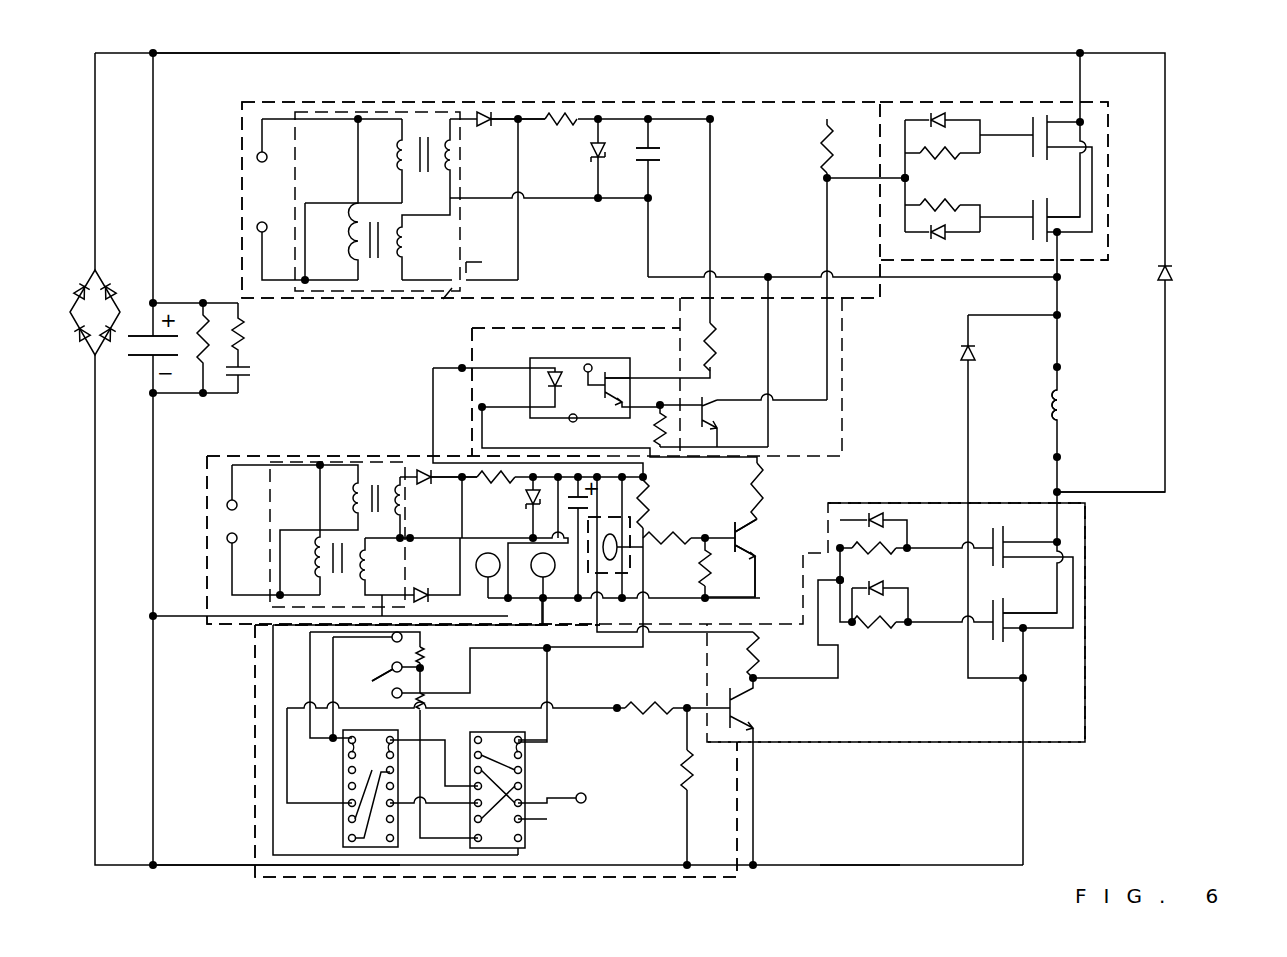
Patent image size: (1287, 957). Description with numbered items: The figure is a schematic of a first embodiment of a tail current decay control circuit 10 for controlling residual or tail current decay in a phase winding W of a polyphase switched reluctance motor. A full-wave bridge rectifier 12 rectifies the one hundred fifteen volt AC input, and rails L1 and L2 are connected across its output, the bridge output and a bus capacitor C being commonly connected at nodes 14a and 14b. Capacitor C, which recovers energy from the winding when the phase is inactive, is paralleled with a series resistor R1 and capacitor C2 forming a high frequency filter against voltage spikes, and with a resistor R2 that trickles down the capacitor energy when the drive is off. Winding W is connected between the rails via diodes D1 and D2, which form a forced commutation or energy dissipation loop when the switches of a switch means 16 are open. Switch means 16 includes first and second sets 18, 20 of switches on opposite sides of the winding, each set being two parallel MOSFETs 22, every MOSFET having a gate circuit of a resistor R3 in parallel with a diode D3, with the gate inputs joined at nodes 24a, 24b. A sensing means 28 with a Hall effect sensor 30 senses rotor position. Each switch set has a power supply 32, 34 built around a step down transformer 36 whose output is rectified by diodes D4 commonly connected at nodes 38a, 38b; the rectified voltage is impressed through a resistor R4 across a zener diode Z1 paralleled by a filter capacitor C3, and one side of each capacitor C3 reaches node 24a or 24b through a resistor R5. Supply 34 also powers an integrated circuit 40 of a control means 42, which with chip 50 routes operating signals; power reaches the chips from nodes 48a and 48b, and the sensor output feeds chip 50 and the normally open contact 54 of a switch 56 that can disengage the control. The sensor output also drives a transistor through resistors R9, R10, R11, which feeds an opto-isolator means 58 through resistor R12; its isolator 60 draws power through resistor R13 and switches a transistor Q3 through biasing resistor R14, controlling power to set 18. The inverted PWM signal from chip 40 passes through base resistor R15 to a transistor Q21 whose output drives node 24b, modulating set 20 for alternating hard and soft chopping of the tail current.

The tail current decay control circuit 10 is at (1165, 492).
The full-wave bridge rectifier 12 is at (84, 367).
The node 14a is at (276, 75).
The node 14b is at (153, 862).
The switch means 16 is at (1152, 217).
The first set of switches 18 is at (1097, 275).
The second set of switches 20 is at (1097, 663).
The MOSFET 22 is at (1030, 136).
The node 24a is at (905, 181).
The node 24b is at (838, 578).
The sensing means 28 is at (645, 585).
The Hall effect sensor 30 is at (616, 552).
The power supply 32 is at (350, 93).
The power supply 34 is at (410, 449).
The step down transformer 36 is at (293, 182).
The node 38a is at (518, 117).
The node 38b is at (458, 470).
The integrated circuit 40 is at (343, 778).
The control means 42 is at (250, 651).
The node 48a is at (505, 600).
The node 48b is at (560, 590).
The chip 50 is at (526, 765).
The normally open contact 54 is at (378, 693).
The switch 56 is at (348, 652).
The opto-isolator means 58 is at (470, 345).
The isolator 60 is at (591, 358).
The bus capacitor C is at (138, 333).
The capacitor C2 is at (253, 369).
The filter capacitor C3 is at (652, 163).
The resistor R1 is at (243, 327).
The resistor R2 is at (203, 318).
The resistor R3 is at (945, 160).
The resistor R4 is at (575, 128).
The resistor R5 is at (823, 150).
The resistor R9 is at (650, 520).
The resistor R10 is at (690, 511).
The resistor R11 is at (709, 566).
The resistor R12 is at (755, 500).
The resistor R13 is at (742, 323).
The biasing resistor R14 is at (655, 425).
The base resistor R15 is at (658, 700).
The diode D1 is at (964, 361).
The diode D2 is at (1160, 280).
The diode D3 is at (937, 112).
The rectifying diode D4 is at (496, 127).
The zener diode Z1 is at (595, 165).
The transistor Q3 is at (704, 404).
The transistor Q21 is at (765, 569).
The phase winding W is at (1038, 424).
The rail L1 is at (685, 56).
The rail L2 is at (880, 864).